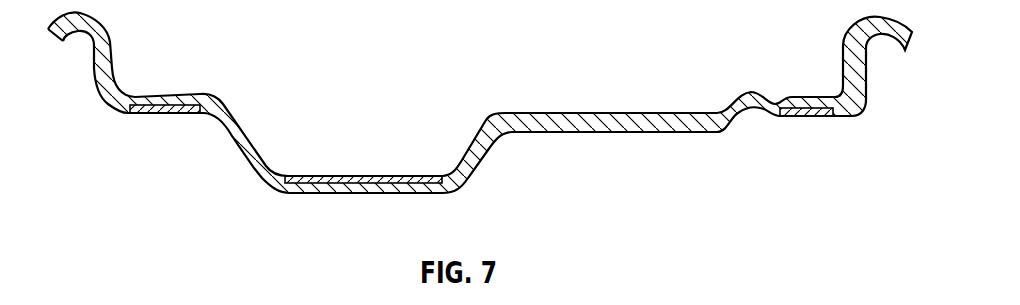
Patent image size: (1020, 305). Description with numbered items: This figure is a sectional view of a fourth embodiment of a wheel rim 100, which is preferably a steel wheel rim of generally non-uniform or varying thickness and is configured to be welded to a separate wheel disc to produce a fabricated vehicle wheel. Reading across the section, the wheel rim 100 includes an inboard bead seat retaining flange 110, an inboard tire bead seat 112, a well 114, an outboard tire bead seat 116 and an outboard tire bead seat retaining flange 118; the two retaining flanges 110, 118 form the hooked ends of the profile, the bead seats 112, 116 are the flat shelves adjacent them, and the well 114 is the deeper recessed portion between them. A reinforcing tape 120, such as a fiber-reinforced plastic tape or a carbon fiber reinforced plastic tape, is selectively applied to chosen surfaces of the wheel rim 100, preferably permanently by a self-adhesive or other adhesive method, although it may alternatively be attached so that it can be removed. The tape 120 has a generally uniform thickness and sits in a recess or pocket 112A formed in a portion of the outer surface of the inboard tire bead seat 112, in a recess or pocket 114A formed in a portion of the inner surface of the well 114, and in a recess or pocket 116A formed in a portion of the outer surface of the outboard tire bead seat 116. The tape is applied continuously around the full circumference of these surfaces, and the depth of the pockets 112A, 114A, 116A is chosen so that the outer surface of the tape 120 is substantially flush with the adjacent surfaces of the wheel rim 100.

The wheel rim 100 is at (518, 110).
The inboard bead seat retaining flange 110 is at (868, 70).
The inboard tire bead seat 112 is at (803, 96).
The recess or pocket of the inboard tire bead seat 112A is at (813, 114).
The well 114 is at (473, 157).
The recess or pocket of the well 114A is at (370, 175).
The outboard tire bead seat 116 is at (160, 92).
The recess or pocket of the outboard tire bead seat 116A is at (155, 114).
The outboard tire bead seat retaining flange 118 is at (91, 68).
The reinforcing tape 120 is at (187, 117).